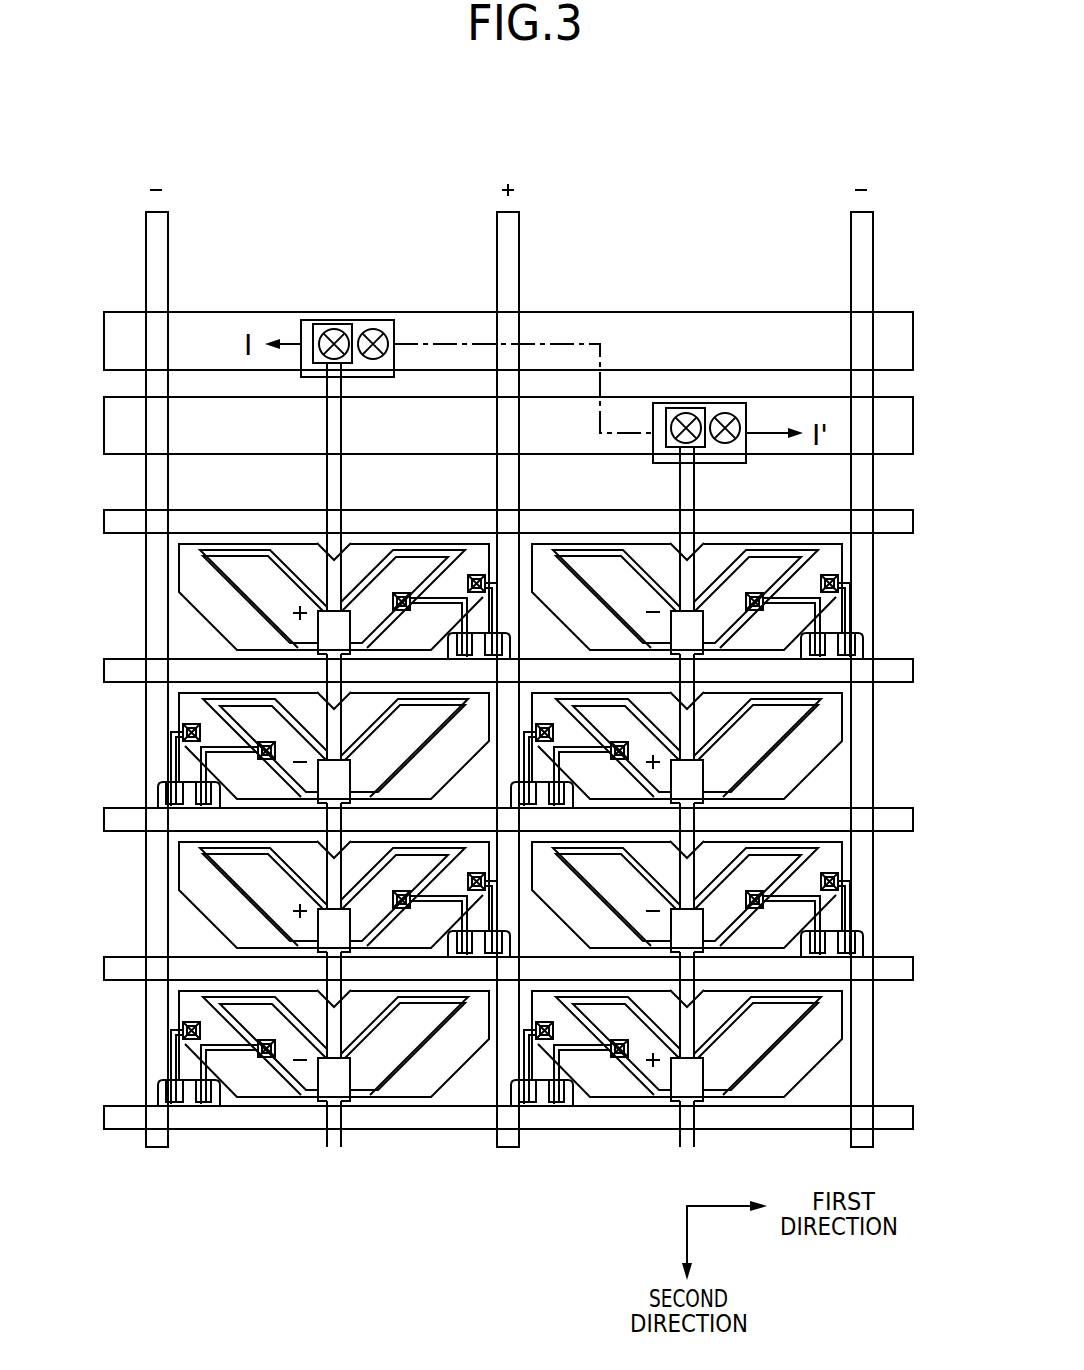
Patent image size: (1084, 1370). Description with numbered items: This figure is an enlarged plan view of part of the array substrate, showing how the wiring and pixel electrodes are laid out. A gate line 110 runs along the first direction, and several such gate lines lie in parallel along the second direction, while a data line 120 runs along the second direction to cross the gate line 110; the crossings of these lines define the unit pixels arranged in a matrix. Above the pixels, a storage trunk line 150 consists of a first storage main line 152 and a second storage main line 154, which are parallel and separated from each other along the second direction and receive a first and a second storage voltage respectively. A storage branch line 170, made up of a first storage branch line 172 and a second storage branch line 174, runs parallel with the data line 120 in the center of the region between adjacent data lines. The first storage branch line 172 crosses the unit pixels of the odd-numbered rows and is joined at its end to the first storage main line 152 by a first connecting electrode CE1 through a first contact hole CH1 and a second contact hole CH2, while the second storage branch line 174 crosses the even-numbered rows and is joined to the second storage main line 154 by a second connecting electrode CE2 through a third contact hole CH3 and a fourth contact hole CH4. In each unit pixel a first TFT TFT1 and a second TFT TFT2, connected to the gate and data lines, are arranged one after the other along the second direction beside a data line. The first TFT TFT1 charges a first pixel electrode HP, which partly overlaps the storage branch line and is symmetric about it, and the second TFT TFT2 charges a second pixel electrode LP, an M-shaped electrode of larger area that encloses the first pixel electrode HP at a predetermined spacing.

The gate line 110 is at (163, 657).
The data line 120 is at (183, 231).
The storage trunk line 150 is at (508, 335).
The first storage main line 152 is at (767, 330).
The second storage main line 154 is at (822, 403).
The storage branch line 170 is at (503, 813).
The first storage branch line 172 is at (317, 1108).
The second storage branch line 174 is at (620, 1050).
The first connecting electrode CE1 is at (320, 321).
The second connecting electrode CE2 is at (670, 403).
The first contact hole CH1 is at (338, 328).
The second contact hole CH2 is at (386, 330).
The third contact hole CH3 is at (698, 410).
The fourth contact hole CH4 is at (737, 410).
The first TFT TFT1 is at (206, 1141).
The second TFT TFT2 is at (180, 1134).
The second pixel electrode LP is at (267, 1090).
The first pixel electrode HP is at (360, 1088).